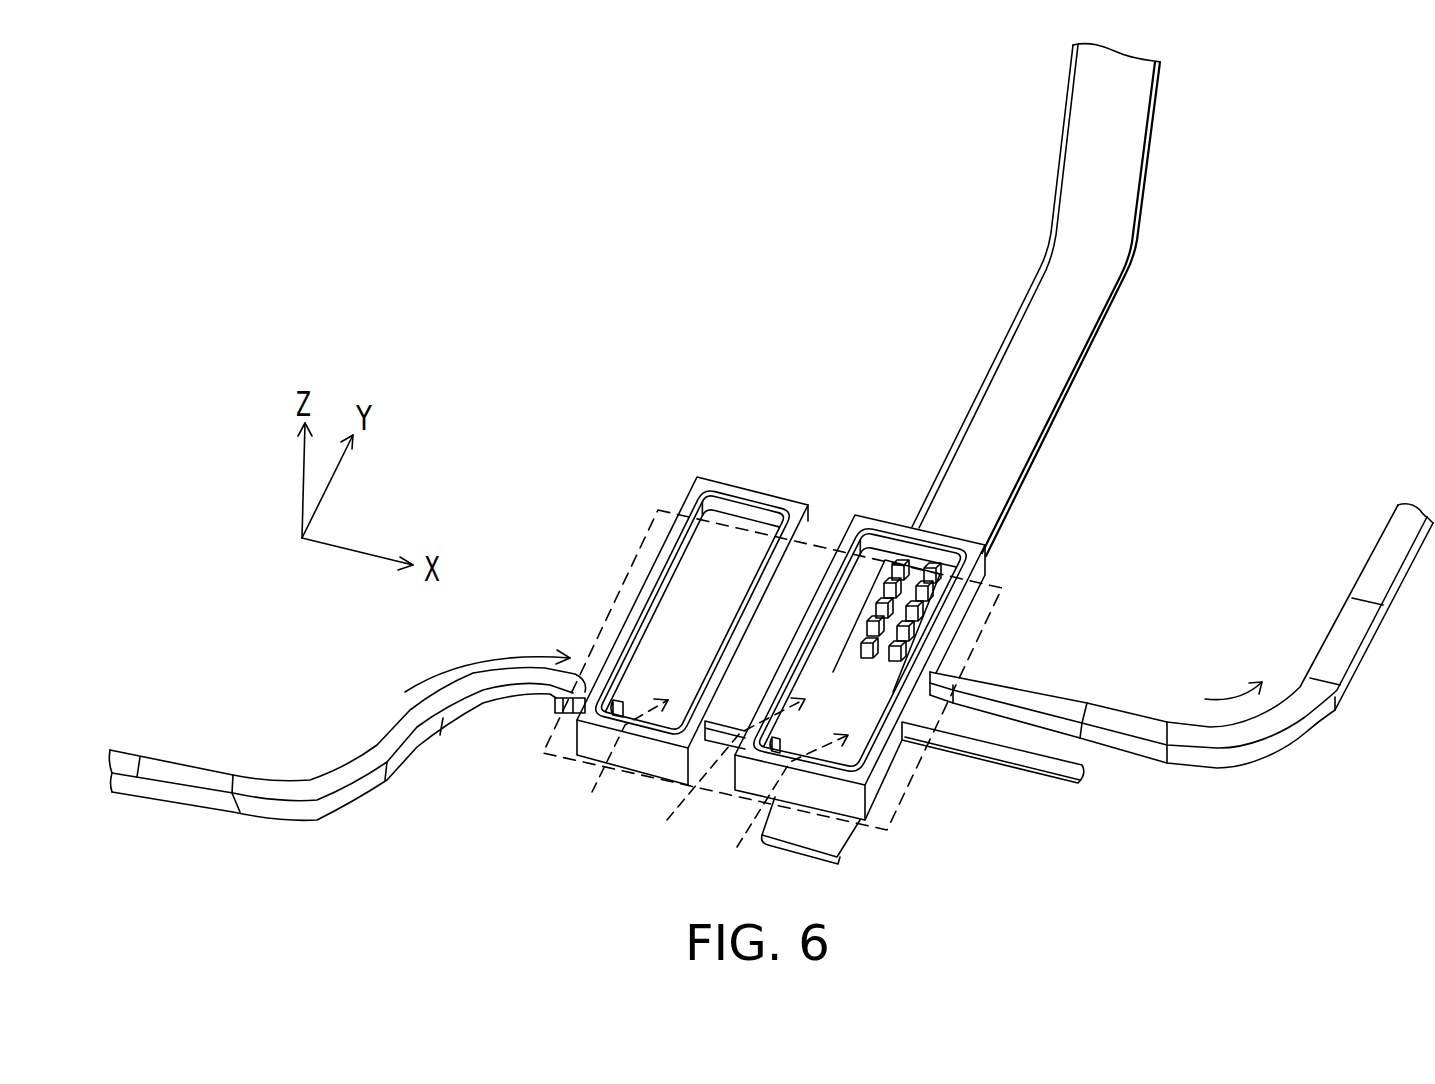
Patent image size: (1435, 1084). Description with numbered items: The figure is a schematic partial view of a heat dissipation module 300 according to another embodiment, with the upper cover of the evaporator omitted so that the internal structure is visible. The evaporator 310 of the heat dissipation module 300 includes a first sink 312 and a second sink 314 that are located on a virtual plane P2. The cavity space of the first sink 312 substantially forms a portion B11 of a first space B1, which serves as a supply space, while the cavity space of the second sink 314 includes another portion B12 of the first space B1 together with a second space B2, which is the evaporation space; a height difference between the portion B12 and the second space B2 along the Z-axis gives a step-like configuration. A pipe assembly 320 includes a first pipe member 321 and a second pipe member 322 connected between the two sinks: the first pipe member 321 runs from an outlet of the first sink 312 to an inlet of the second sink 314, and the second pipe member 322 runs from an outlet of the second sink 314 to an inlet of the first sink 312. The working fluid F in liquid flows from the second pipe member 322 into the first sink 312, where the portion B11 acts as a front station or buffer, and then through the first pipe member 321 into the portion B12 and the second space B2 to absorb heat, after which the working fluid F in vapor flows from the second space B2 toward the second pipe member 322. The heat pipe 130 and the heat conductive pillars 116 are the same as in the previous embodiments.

The heat dissipation module 300 is at (520, 293).
The evaporator 310 is at (157, 214).
The first sink 312 is at (750, 497).
The second sink 314 is at (887, 528).
The pipe assembly 320 is at (157, 317).
The first pipe member 321 is at (725, 723).
The second pipe member 322 is at (317, 808).
The heat pipe 130 is at (1038, 403).
The heat conductive pillars 116 is at (930, 573).
The virtual plane P2 is at (650, 528).
The first space (supply space) B1 is at (670, 860).
The portion of the first space B11 is at (618, 768).
The portion of the first space B12 is at (721, 779).
The second space (evaporation space) B2 is at (784, 815).
The working fluid F is at (833, 658).